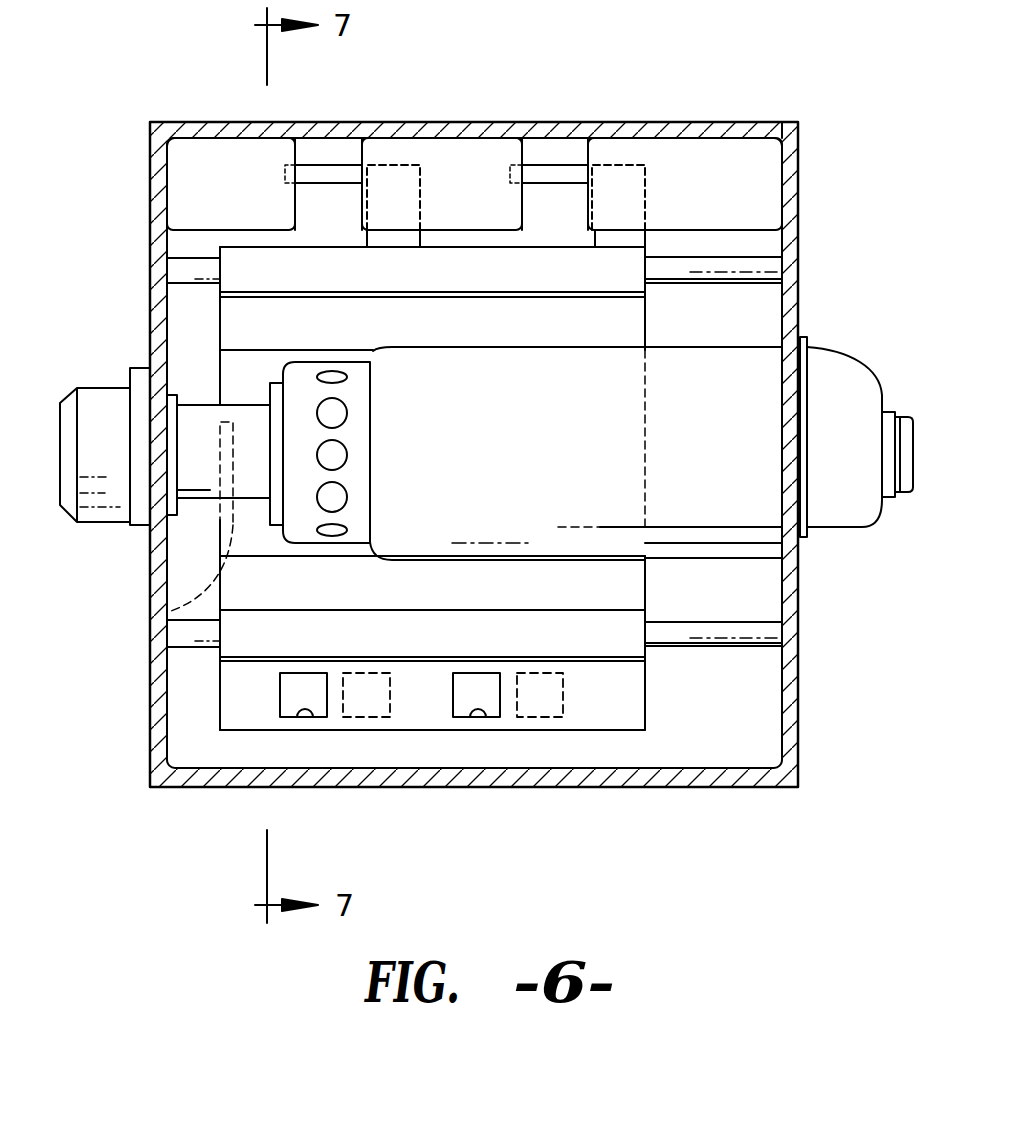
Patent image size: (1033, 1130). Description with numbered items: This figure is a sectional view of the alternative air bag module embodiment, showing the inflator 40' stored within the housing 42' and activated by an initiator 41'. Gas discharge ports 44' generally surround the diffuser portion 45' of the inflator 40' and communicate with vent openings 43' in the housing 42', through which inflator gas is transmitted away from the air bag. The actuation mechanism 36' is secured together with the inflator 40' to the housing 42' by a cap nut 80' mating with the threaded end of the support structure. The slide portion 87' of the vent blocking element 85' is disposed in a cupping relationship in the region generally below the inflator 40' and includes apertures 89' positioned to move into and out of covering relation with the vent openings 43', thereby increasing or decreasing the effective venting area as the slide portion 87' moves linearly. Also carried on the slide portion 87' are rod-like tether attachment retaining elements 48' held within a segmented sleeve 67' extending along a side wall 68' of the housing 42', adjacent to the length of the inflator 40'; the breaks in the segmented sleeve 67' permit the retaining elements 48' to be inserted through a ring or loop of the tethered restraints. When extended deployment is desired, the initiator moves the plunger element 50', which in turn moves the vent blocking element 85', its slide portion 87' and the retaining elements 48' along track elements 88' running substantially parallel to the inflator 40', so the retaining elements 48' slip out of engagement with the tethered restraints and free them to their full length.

The actuation mechanism 36' is at (118, 385).
The inflator 40' is at (856, 416).
The initiator 41' is at (904, 415).
The housing 42' is at (507, 454).
The vent openings 43' is at (486, 760).
The gas discharge ports 44' is at (355, 453).
The diffuser portion 45' is at (325, 418).
The tether attachment retaining elements 48' is at (459, 150).
The plunger element 50' is at (157, 524).
The segmented sleeve 67' is at (464, 159).
The side wall 68' is at (824, 109).
The cap nut 80' is at (95, 412).
The vent blocking element 85' is at (724, 776).
The slide portion 87' is at (466, 554).
The track elements 88' is at (756, 420).
The apertures 89' is at (416, 759).